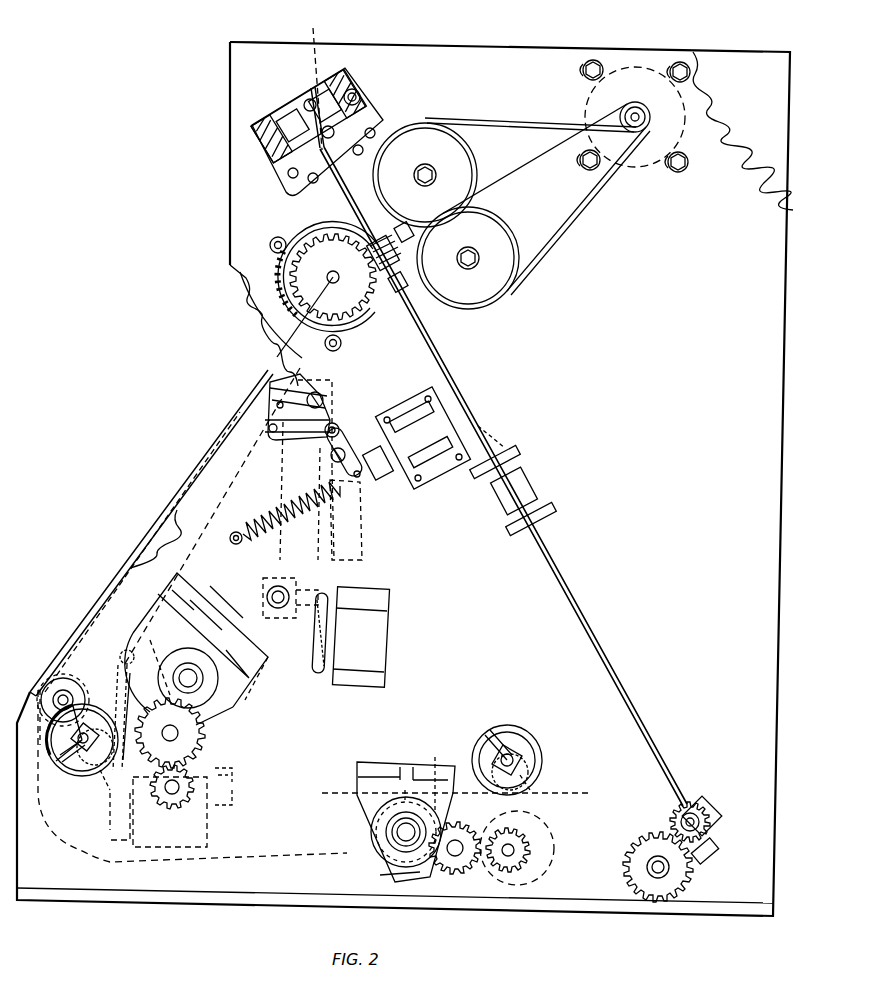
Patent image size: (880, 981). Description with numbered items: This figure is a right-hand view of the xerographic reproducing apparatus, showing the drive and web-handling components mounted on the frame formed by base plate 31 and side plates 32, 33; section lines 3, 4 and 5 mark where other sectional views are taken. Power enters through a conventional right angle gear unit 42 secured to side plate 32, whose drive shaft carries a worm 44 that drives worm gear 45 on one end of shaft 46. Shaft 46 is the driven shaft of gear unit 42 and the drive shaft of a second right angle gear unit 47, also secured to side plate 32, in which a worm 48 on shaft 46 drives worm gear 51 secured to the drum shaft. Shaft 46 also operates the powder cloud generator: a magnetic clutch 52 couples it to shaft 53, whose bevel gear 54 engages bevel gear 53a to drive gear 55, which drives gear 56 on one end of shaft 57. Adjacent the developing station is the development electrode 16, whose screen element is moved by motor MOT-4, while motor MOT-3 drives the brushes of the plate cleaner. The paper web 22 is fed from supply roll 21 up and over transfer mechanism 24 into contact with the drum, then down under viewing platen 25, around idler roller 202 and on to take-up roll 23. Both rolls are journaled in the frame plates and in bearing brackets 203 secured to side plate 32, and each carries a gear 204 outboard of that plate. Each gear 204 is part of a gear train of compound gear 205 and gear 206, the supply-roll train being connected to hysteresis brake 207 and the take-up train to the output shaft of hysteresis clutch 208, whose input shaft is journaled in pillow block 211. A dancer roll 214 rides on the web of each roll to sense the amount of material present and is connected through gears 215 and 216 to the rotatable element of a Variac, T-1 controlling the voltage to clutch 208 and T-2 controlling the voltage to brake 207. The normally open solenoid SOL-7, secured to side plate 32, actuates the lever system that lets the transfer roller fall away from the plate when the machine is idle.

The section line 3- 3 is at (313, 28).
The section line 4- 4 is at (322, 793).
The section line 5- 5 is at (188, 580).
The development electrode 16 is at (330, 418).
The supply roll 21 is at (188, 663).
The paper web 22 is at (190, 578).
The take-up roll 23 is at (388, 826).
The transfer mechanism 24 is at (268, 372).
The viewing platen 25 is at (206, 456).
The base plate 31 is at (581, 904).
The side plate 32 is at (616, 54).
The side plate 33 is at (750, 54).
The right angle gear unit 42 is at (396, 104).
The worm 44 is at (366, 78).
The worm gear 45 is at (365, 96).
The shaft 46 is at (333, 277).
The second right angle gear unit 47 is at (310, 230).
The worm 48 is at (400, 257).
The worm gear 51 is at (292, 268).
The magnetic clutch 52 is at (498, 512).
The shaft 53 is at (540, 540).
The bevel gear 53a is at (712, 800).
The bevel gear 54 is at (708, 838).
The gear 55 is at (686, 804).
The gear 56 is at (640, 842).
The shaft 57 is at (668, 866).
The idler roller 202 is at (48, 682).
The bearing brackets 203 is at (256, 664).
The gear 204 is at (222, 712).
The compound gear 205 is at (206, 740).
The gear 206 is at (190, 797).
The hysteresis brake 207 is at (233, 797).
The hysteresis clutch 208 is at (552, 843).
The pillow block 211 is at (232, 774).
The dancer roll 214 is at (122, 670).
The gear 215 is at (544, 783).
The gear 216 is at (85, 760).
The motor MOT-3 is at (672, 138).
The motor MOT-4 is at (378, 634).
The solenoid SOL-7 is at (402, 470).
The Variac T-1 is at (531, 738).
The Variac T-2 is at (112, 704).